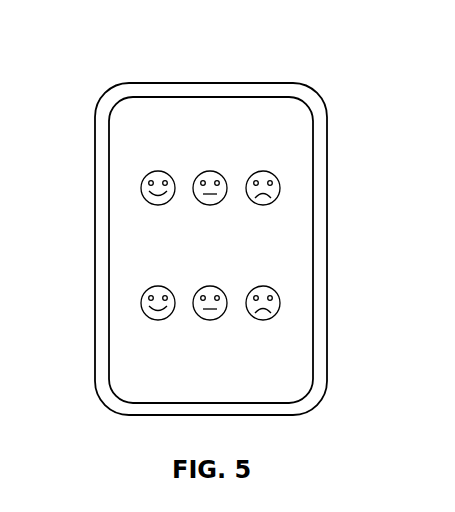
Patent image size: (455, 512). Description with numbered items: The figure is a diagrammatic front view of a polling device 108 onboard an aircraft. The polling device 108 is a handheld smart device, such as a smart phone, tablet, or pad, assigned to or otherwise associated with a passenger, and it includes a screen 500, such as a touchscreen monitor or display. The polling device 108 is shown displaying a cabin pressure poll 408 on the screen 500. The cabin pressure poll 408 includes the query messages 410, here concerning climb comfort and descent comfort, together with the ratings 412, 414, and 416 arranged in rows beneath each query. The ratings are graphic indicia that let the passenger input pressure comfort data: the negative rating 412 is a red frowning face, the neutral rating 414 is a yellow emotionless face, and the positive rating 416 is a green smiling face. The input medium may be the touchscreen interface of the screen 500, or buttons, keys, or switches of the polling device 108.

The polling device 108 is at (322, 65).
The cabin pressure poll 408 is at (133, 227).
The query messages 410 is at (222, 110).
The negative rating 412 is at (282, 188).
The neutral rating 414 is at (252, 186).
The positive rating 416 is at (141, 188).
The screen 500 is at (280, 224).